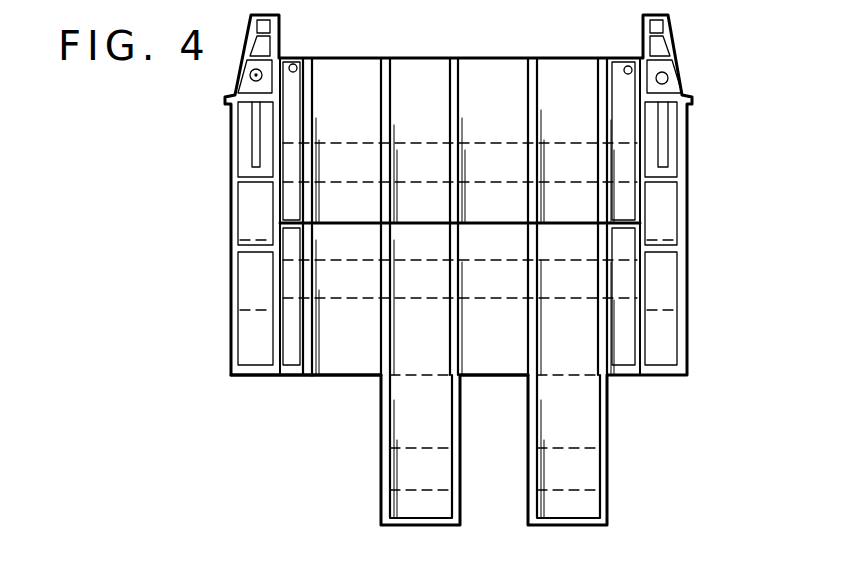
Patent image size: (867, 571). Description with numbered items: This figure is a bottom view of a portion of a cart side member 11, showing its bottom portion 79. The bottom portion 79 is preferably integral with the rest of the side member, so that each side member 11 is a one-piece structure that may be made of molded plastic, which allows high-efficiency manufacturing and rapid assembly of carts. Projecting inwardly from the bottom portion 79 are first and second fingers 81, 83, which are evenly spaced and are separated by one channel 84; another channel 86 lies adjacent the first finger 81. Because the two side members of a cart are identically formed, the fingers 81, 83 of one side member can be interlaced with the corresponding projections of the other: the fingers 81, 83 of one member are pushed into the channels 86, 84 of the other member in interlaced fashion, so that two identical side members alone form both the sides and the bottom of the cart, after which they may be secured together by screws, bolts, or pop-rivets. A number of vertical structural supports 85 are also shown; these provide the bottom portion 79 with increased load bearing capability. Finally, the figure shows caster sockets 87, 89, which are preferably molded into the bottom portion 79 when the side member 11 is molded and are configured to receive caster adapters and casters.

The side member 11 is at (708, 200).
The bottom portion 79 is at (316, 376).
The first inwardly projecting finger 81 is at (383, 473).
The second inwardly projecting finger 83 is at (608, 480).
The channel 84 is at (505, 341).
The vertical structural supports 85 is at (449, 83).
The channel 86 is at (372, 352).
The caster socket 87 is at (241, 66).
The caster socket 89 is at (668, 80).